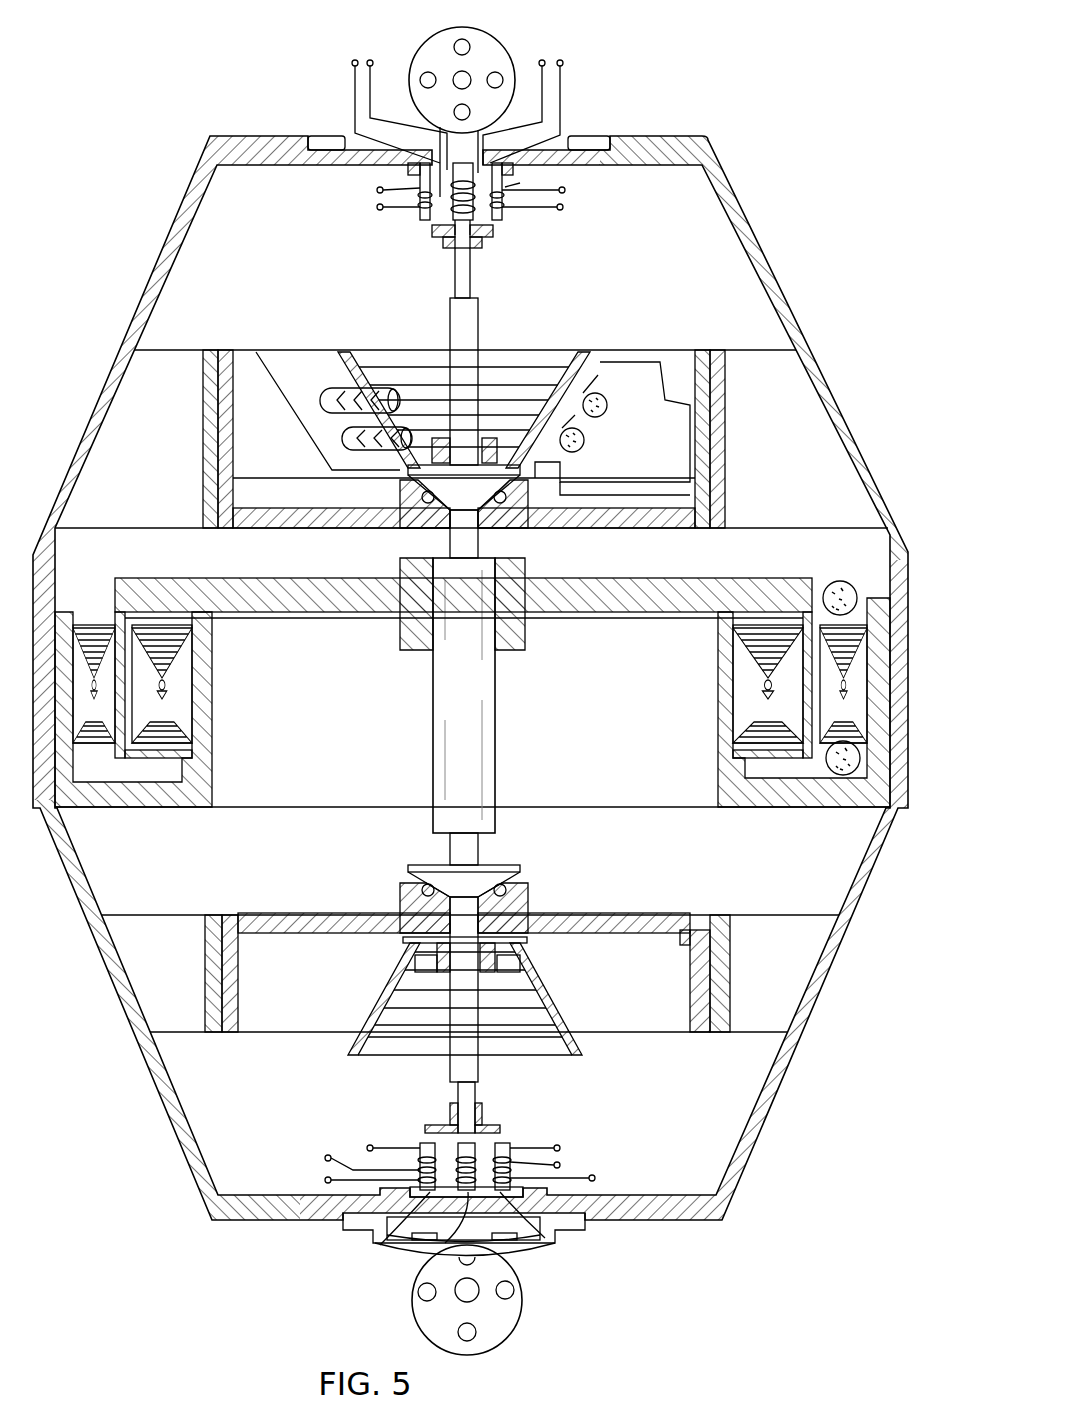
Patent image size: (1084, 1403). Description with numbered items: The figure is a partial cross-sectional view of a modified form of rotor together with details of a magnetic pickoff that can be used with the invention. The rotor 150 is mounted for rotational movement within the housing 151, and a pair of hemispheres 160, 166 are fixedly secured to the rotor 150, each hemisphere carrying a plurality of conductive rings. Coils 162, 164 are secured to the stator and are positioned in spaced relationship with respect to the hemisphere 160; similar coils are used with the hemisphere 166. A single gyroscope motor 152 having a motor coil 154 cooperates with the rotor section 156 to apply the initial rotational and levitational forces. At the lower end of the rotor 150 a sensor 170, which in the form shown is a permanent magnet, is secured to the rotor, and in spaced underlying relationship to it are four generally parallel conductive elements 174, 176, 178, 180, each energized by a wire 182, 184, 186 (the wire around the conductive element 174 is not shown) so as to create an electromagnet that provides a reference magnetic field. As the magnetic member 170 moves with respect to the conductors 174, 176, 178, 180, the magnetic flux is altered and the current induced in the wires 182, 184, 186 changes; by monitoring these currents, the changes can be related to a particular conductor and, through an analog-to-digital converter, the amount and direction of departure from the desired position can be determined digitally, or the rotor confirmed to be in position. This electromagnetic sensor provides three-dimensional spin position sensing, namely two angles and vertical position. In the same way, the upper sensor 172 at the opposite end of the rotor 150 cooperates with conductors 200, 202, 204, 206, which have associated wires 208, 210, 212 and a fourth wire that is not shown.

The rotor 150 is at (480, 711).
The housing 151 is at (805, 1040).
The gyroscope motor 152 is at (78, 718).
The motor coil 154 is at (840, 581).
The rotor section 156 is at (146, 718).
The hemisphere 160 is at (580, 375).
The coil 162 is at (340, 388).
The coil 164 is at (345, 440).
The hemisphere 166 is at (545, 975).
The sensor 170 is at (485, 1115).
The upper sensor 172 is at (492, 237).
The conductive element 174 is at (500, 1262).
The conductive element 176 is at (560, 1152).
The conductive element 178 is at (540, 1240).
The conductive element 180 is at (425, 1143).
The wire 182 is at (535, 1145).
The wire 184 is at (395, 1240).
The wire 186 is at (378, 1145).
The conductor 200 is at (470, 45).
The conductor 202 is at (502, 74).
The conductor 204 is at (455, 112).
The conductor 206 is at (422, 75).
The wire 208 is at (555, 190).
The wire 210 is at (452, 232).
The wire 212 is at (377, 207).